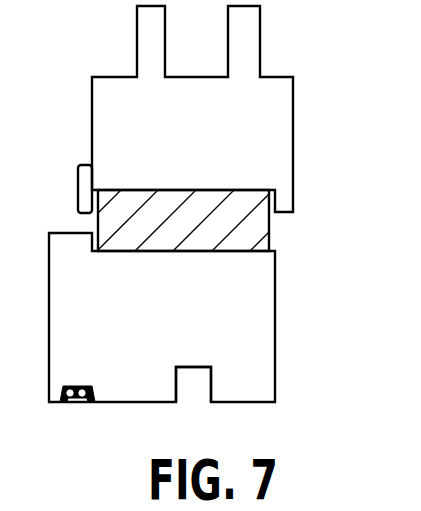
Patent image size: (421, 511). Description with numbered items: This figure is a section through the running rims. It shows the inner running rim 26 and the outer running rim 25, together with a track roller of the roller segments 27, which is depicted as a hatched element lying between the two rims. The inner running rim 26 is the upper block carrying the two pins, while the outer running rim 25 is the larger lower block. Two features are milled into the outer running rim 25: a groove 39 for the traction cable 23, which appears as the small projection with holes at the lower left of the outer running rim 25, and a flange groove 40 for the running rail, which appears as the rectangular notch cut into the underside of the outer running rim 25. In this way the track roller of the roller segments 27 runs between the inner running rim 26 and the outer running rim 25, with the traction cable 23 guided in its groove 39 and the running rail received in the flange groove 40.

The outer running rim 25 is at (267, 332).
The inner running rim 26 is at (270, 140).
The roller segments 27 is at (265, 228).
The traction cable 23 is at (78, 402).
The groove 39 is at (63, 402).
The flange groove 40 is at (178, 403).